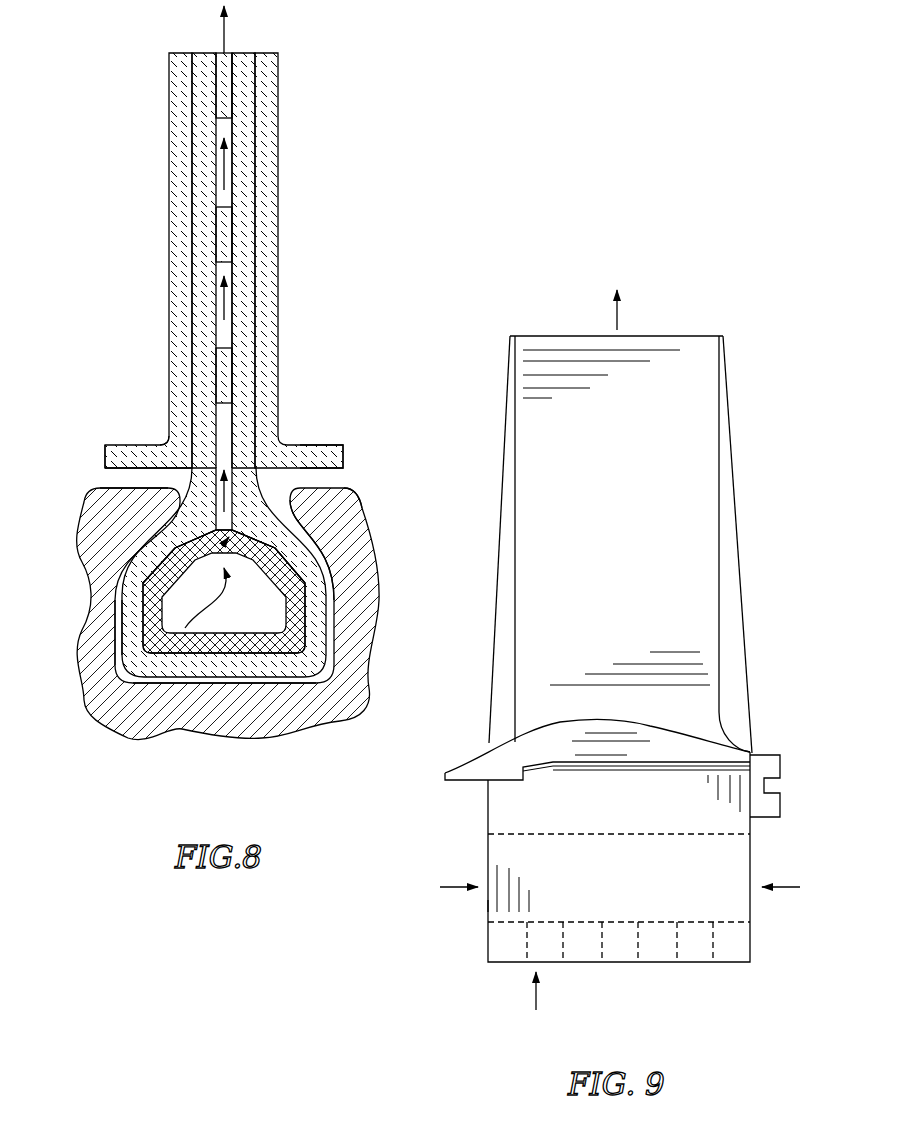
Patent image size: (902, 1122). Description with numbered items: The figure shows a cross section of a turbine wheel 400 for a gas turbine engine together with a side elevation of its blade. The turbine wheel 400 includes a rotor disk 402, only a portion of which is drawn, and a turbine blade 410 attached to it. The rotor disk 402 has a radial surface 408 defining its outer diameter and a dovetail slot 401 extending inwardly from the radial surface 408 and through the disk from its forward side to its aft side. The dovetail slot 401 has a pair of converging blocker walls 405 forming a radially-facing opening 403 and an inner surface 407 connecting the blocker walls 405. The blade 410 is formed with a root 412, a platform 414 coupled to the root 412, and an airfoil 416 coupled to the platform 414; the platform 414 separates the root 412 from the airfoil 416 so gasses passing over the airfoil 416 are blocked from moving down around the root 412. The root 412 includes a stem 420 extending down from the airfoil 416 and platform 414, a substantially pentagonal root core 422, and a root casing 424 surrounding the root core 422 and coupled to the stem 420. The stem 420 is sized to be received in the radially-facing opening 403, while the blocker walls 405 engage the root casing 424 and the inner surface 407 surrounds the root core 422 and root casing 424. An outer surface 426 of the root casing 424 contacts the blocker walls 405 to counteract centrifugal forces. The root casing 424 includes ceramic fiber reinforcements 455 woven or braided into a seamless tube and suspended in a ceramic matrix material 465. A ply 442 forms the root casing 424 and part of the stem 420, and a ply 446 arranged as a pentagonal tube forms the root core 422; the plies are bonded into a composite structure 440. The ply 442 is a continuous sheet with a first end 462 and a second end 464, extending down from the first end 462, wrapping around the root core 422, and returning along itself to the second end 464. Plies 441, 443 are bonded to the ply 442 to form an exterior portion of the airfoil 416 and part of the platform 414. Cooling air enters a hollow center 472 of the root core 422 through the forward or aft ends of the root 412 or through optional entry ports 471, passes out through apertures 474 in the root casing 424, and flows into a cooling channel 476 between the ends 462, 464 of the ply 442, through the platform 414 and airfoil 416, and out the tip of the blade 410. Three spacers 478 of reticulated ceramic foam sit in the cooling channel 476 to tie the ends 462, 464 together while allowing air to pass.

In FIG. 8, the turbine wheel 400 is at (420, 86).
In FIG. 8, the dovetail slot 401 is at (277, 699).
In FIG. 8, the rotor disk 402 is at (414, 518).
In FIG. 8, the radially-facing opening 403 is at (161, 438).
In FIG. 8, the blocker walls 405 is at (163, 502).
In FIG. 8, the inner surface 407 is at (213, 690).
In FIG. 8, the radial surface 408 is at (155, 480).
In FIG. 8, the turbine blade 410 is at (412, 182).
In FIG. 9, the turbine blade 410 is at (668, 254).
In FIG. 8, the root 412 is at (332, 507).
In FIG. 9, the root 412 is at (438, 835).
In FIG. 9, the platform 414 is at (468, 720).
In FIG. 8, the airfoil 416 is at (332, 240).
In FIG. 9, the airfoil 416 is at (750, 426).
In FIG. 8, the stem 420 is at (113, 456).
In FIG. 8, the root core 422 is at (141, 643).
In FIG. 8, the root casing 424 is at (320, 508).
In FIG. 9, the root casing 424 is at (706, 877).
In FIG. 8, the outer surface 426 is at (315, 547).
In FIG. 9, the outer surface 426 is at (715, 898).
In FIG. 8, the composite structure 440 is at (358, 295).
In FIG. 8, the ply 441 is at (166, 197).
In FIG. 8, the ply 442 is at (236, 293).
In FIG. 8, the ply 443 is at (280, 168).
In FIG. 8, the ply 446 is at (141, 618).
In FIG. 8, the ceramic fiber reinforcements 455 is at (305, 577).
In FIG. 8, the first end 462 is at (203, 68).
In FIG. 8, the second end 464 is at (244, 68).
In FIG. 8, the ceramic matrix material 465 is at (304, 631).
In FIG. 9, the entry ports 471 is at (553, 937).
In FIG. 8, the hollow center 472 is at (226, 608).
In FIG. 9, the hollow center 472 is at (482, 907).
In FIG. 8, the apertures 474 is at (263, 468).
In FIG. 8, the cooling channel 476 is at (236, 418).
In FIG. 8, the spacers 478 is at (212, 103).